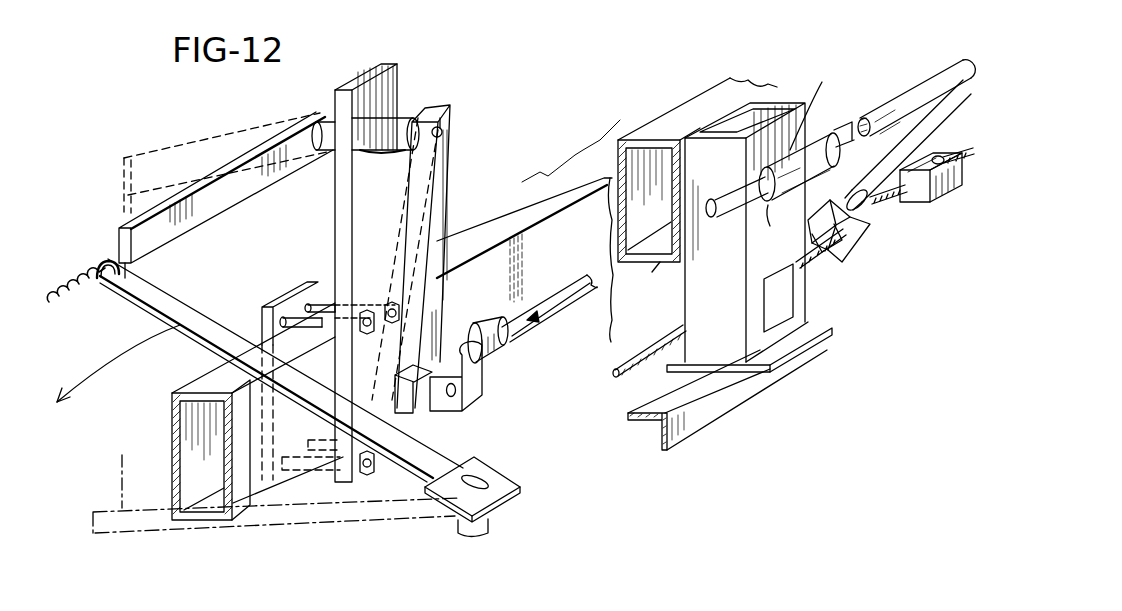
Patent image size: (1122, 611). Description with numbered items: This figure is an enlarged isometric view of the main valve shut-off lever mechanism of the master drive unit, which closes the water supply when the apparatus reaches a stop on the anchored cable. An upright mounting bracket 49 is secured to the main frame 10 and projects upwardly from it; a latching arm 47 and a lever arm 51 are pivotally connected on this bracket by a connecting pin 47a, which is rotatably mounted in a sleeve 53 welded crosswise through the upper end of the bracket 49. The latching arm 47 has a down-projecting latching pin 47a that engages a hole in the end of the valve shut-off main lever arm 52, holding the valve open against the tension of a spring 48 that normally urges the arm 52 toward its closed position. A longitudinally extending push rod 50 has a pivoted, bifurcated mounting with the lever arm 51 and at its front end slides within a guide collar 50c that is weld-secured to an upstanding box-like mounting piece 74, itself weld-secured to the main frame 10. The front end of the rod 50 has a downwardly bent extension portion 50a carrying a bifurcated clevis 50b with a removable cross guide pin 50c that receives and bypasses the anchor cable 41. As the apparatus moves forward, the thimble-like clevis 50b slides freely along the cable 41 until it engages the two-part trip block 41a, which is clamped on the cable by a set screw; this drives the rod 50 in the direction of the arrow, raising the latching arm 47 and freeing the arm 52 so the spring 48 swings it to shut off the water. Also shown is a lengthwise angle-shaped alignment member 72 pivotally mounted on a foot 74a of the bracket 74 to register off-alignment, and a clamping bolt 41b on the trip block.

The main frame 10 is at (483, 222).
The anchor cable 41 is at (638, 350).
The stop or trip block 41a is at (924, 204).
The bolt 41b is at (950, 186).
The latching arm 47 is at (158, 243).
The connecting pin / latching pin 47a is at (118, 286).
The spring 48 is at (78, 290).
The mounting bracket 49 is at (340, 260).
The push rod 50 is at (548, 336).
The extension portion 50a is at (944, 112).
The bifurcated bracket or clevis 50b is at (860, 240).
The guide collar / guide pin 50c is at (788, 150).
The lever arm 51 is at (450, 182).
The valve shut-off main lever arm 52 is at (226, 328).
The sleeve 53 is at (395, 120).
The angle-shaped alignment arm member 72 is at (706, 425).
The box-like mounting piece / bracket 74 is at (740, 360).
The foot 74a is at (800, 350).